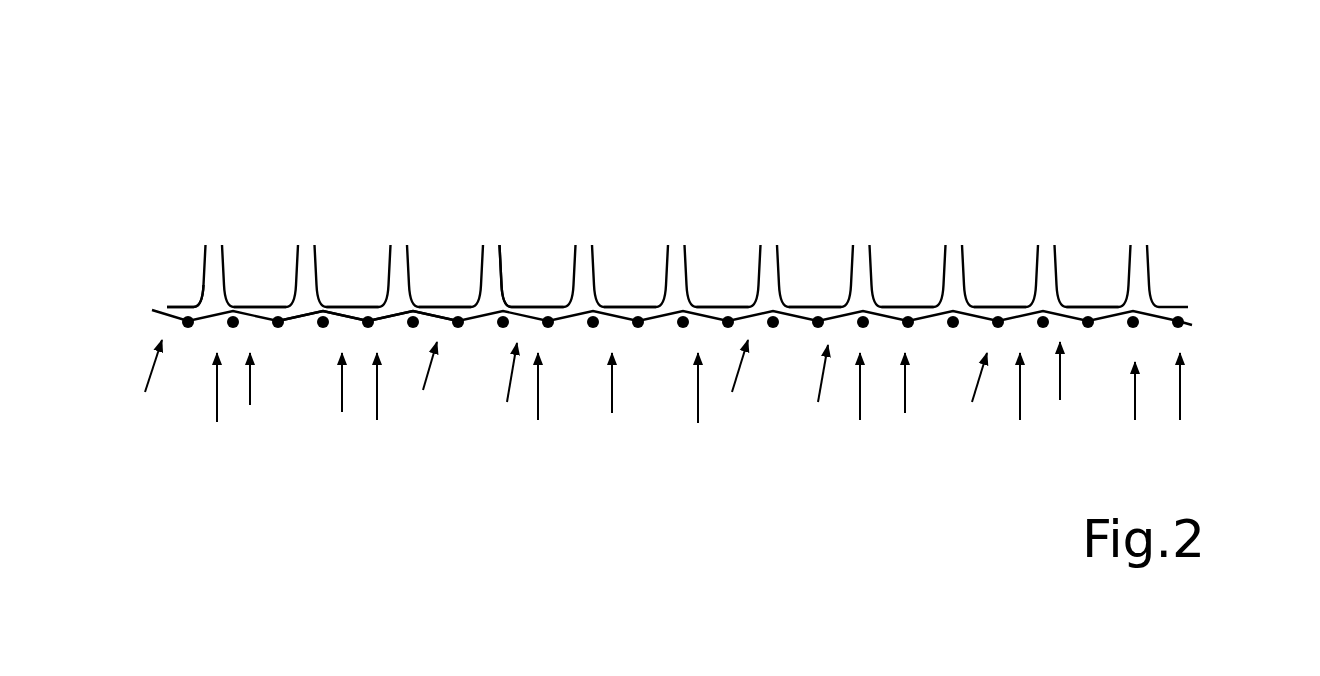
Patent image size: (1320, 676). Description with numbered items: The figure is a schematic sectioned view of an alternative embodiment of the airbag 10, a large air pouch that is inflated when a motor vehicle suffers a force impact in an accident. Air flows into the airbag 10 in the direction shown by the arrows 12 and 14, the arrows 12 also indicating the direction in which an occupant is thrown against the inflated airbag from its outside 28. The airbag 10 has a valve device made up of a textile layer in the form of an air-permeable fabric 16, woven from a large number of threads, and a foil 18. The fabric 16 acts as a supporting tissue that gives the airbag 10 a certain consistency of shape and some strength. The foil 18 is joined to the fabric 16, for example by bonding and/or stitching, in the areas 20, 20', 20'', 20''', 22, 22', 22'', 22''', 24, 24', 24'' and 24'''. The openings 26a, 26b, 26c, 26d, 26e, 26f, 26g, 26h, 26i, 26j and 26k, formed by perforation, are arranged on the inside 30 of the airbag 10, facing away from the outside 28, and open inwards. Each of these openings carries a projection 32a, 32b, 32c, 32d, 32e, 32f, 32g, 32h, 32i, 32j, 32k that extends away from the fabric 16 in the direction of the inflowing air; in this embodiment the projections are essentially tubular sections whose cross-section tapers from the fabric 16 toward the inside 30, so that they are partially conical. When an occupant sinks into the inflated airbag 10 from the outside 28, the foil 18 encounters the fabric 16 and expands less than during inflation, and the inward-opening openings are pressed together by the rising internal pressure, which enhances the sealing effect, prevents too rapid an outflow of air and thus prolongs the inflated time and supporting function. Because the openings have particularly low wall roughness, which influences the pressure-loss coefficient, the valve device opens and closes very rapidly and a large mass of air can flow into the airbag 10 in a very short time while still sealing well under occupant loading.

The airbag 10 is at (1028, 498).
The arrows 12 is at (1207, 388).
The arrows 14 is at (1123, 98).
The fabric 16 is at (1222, 318).
The foil 18 is at (523, 307).
The area 20 is at (145, 384).
The area 20' is at (426, 384).
The area 20'' is at (739, 384).
The area 20''' is at (987, 398).
The area 22 is at (241, 395).
The area 22' is at (515, 390).
The area 22'' is at (830, 391).
The area 22''' is at (1072, 388).
The area 24 is at (349, 398).
The area 24' is at (645, 398).
The area 24'' is at (911, 398).
The area 24''' is at (1148, 403).
The opening 26a is at (235, 210).
The opening 26b is at (318, 205).
The opening 26c is at (413, 202).
The opening 26d is at (510, 205).
The opening 26e is at (605, 203).
The opening 26f is at (698, 210).
The opening 26g is at (792, 208).
The opening 26h is at (882, 202).
The opening 26i is at (972, 202).
The opening 26j is at (1058, 202).
The opening 26k is at (1158, 200).
The outside 28 is at (322, 315).
The inside 30 is at (414, 313).
The projection 32a is at (187, 295).
The projection 32b is at (280, 295).
The projection 32c is at (377, 282).
The projection 32d is at (468, 282).
The projection 32e is at (560, 285).
The projection 32f is at (652, 282).
The projection 32g is at (748, 287).
The projection 32h is at (840, 288).
The projection 32i is at (933, 278).
The projection 32j is at (1028, 287).
The projection 32k is at (1112, 277).